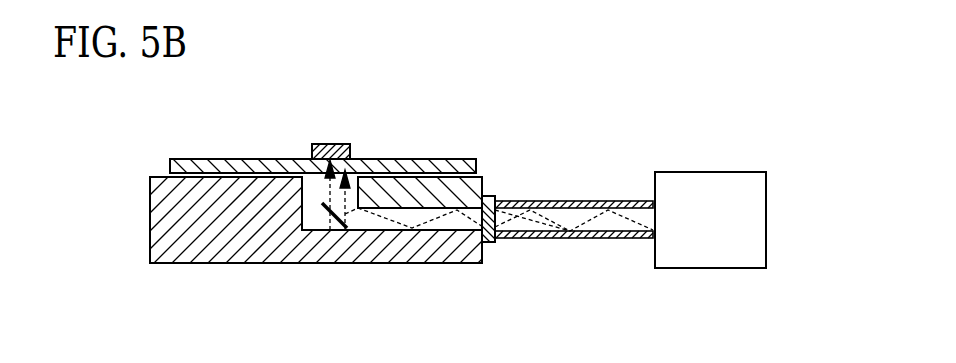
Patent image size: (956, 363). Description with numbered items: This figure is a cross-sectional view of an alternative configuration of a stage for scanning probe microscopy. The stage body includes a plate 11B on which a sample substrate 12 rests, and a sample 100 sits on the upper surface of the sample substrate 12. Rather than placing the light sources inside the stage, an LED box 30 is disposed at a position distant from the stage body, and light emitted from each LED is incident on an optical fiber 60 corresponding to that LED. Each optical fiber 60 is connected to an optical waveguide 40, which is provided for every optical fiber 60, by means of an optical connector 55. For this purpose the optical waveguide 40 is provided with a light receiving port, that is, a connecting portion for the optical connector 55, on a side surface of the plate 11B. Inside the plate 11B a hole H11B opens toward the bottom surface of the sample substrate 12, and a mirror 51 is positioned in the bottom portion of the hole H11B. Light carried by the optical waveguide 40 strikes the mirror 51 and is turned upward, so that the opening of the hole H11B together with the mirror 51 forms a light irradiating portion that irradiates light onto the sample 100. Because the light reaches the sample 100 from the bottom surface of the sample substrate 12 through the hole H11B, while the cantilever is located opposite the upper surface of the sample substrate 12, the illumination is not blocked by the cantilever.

The plate 11B is at (150, 235).
The hole H11B is at (304, 214).
The sample substrate 12 is at (170, 166).
The sample 100 is at (352, 152).
The mirror 51 is at (334, 226).
The optical waveguide 40 is at (443, 223).
The optical connector 55 is at (490, 243).
The optical fiber 60 is at (553, 200).
The LED box 30 is at (767, 218).